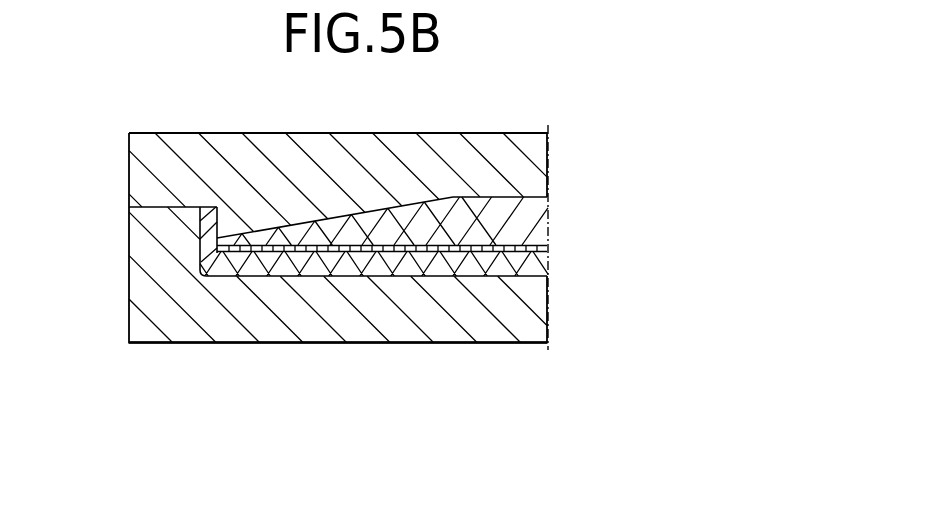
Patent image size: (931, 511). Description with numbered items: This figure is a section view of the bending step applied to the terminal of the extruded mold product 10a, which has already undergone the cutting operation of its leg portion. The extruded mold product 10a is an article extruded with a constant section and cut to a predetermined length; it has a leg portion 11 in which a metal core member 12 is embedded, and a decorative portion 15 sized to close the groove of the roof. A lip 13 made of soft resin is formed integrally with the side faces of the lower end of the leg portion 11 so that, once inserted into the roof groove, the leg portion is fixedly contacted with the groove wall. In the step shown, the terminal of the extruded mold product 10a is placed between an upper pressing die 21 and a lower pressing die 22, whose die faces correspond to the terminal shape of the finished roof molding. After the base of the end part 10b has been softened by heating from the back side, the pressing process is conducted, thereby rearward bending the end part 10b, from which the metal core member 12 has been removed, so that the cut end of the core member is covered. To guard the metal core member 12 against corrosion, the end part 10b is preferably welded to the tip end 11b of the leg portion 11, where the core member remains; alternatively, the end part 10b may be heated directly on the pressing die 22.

The extruded mold product 10a is at (547, 212).
The end part 10b is at (198, 233).
The leg portion 11 is at (380, 216).
The tip end of the leg portion 11b is at (219, 240).
The metal core member 12 is at (545, 249).
The lip 13 is at (530, 200).
The decorative portion 15 is at (540, 272).
The pressing die 21 is at (527, 134).
The pressing die 22 is at (543, 325).